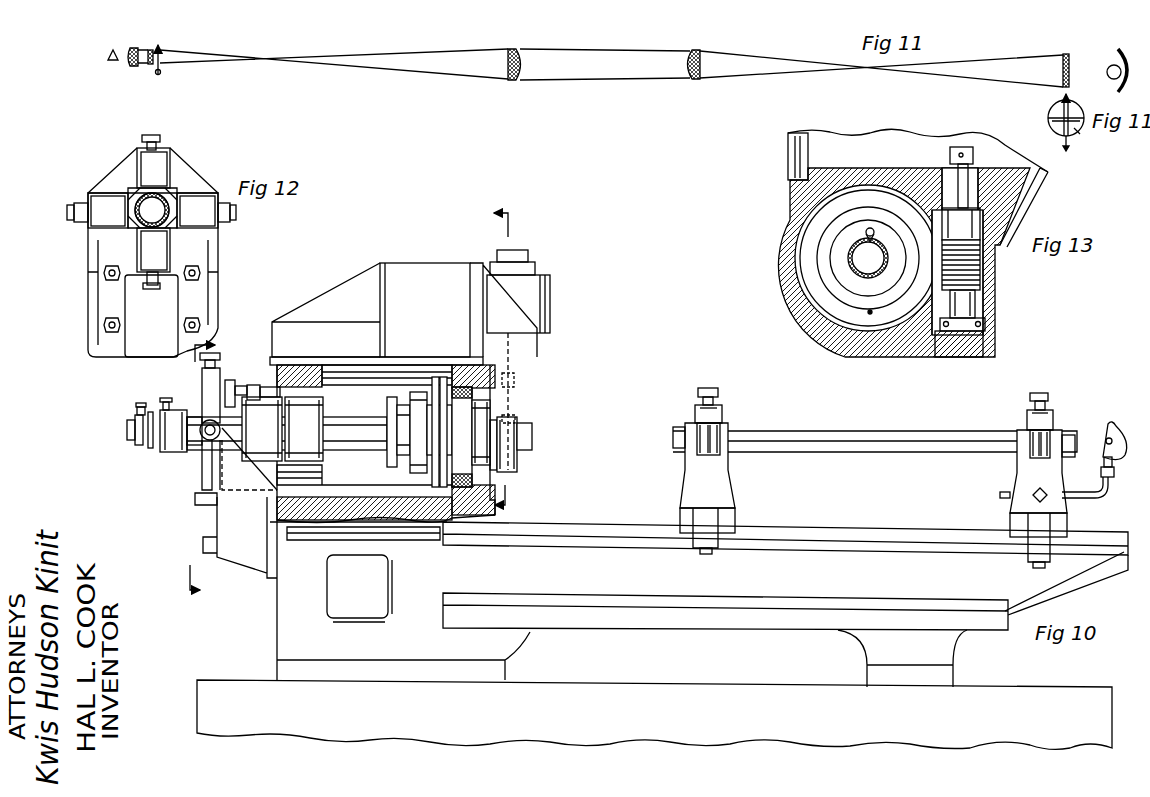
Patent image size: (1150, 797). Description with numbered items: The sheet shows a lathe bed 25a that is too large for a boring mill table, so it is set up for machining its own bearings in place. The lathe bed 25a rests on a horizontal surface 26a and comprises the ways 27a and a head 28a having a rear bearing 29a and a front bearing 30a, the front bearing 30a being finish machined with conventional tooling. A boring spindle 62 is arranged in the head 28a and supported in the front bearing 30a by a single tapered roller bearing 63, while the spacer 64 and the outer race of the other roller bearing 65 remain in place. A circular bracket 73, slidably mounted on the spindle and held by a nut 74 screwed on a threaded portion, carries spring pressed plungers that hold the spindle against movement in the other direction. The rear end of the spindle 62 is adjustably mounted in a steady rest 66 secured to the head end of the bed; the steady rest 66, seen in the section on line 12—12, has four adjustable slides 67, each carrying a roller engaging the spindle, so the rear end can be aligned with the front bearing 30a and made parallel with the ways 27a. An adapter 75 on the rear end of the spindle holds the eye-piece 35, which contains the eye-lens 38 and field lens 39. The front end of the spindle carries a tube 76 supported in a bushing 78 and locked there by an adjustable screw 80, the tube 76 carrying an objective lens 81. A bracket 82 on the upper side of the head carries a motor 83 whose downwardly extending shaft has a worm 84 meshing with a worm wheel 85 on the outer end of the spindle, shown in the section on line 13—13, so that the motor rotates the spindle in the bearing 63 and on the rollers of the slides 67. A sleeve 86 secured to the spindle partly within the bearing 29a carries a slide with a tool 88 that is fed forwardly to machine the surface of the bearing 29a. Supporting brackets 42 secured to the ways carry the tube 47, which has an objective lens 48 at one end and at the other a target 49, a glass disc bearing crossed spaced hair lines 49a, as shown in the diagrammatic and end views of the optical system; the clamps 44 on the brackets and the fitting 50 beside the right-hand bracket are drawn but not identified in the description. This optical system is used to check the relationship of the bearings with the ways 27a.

In FIG. 10, the section line 12— 12 is at (216, 472).
In FIG. 10, the section line 13— 13 is at (498, 362).
In FIG. 10, the lathe bed 25a is at (725, 626).
In FIG. 10, the horizontal surface 26a is at (654, 714).
In FIG. 10, the ways 27a is at (888, 507).
In FIG. 10, the head 28a is at (320, 383).
In FIG. 10, the bearing 29a is at (318, 485).
In FIG. 10, the front bearing 30a is at (450, 492).
In FIG. 10, the eye-piece 35 is at (143, 450).
In FIG. 11, the eye-lens 38 is at (133, 48).
In FIG. 11, the field lens 39 is at (150, 50).
In FIG. 10, the supporting brackets 42 is at (725, 496).
In FIG. 10, the clamp 44 is at (722, 414).
In FIG. 10, the tube 47 is at (875, 431).
In FIG. 11, the objective lens 48 is at (694, 50).
In FIG. 11, the target 49 is at (1066, 54).
In FIG. 11A, the target 49 is at (1080, 134).
In FIG. 11A, the crossed spaced hair lines 49a is at (1048, 118).
In FIG. 11, the eyepiece hook 50 is at (1108, 65).
In FIG. 10, the eyepiece hook 50 is at (1112, 496).
In FIG. 12, the boring spindle 62 is at (167, 200).
In FIG. 10, the boring spindle 62 is at (348, 420).
In FIG. 10, the roller bearing 63 is at (514, 382).
In FIG. 10, the spacer 64 is at (465, 395).
In FIG. 10, the roller bearing 65 is at (458, 390).
In FIG. 12, the steady rest 66 is at (143, 350).
In FIG. 10, the steady rest 66 is at (223, 520).
In FIG. 12, the adjustable slides 67 is at (172, 206).
In FIG. 10, the circular bracket 73 is at (414, 477).
In FIG. 10, the nut 74 is at (391, 397).
In FIG. 10, the adapter 75 is at (178, 452).
In FIG. 13, the tube 76 is at (868, 258).
In FIG. 10, the tube 76 is at (532, 435).
In FIG. 13, the bushing 78 is at (850, 285).
In FIG. 13, the adjustable screw 80 is at (871, 228).
In FIG. 11, the objective lens 81 is at (513, 49).
In FIG. 13, the bracket 82 is at (788, 162).
In FIG. 10, the bracket 82 is at (405, 268).
In FIG. 10, the motor 83 is at (550, 300).
In FIG. 13, the worm 84 is at (985, 272).
In FIG. 10, the worm 84 is at (517, 455).
In FIG. 13, the worm wheel 85 is at (895, 328).
In FIG. 10, the worm wheel 85 is at (515, 420).
In FIG. 10, the sleeve 86 is at (323, 400).
In FIG. 10, the tool 88 is at (268, 387).